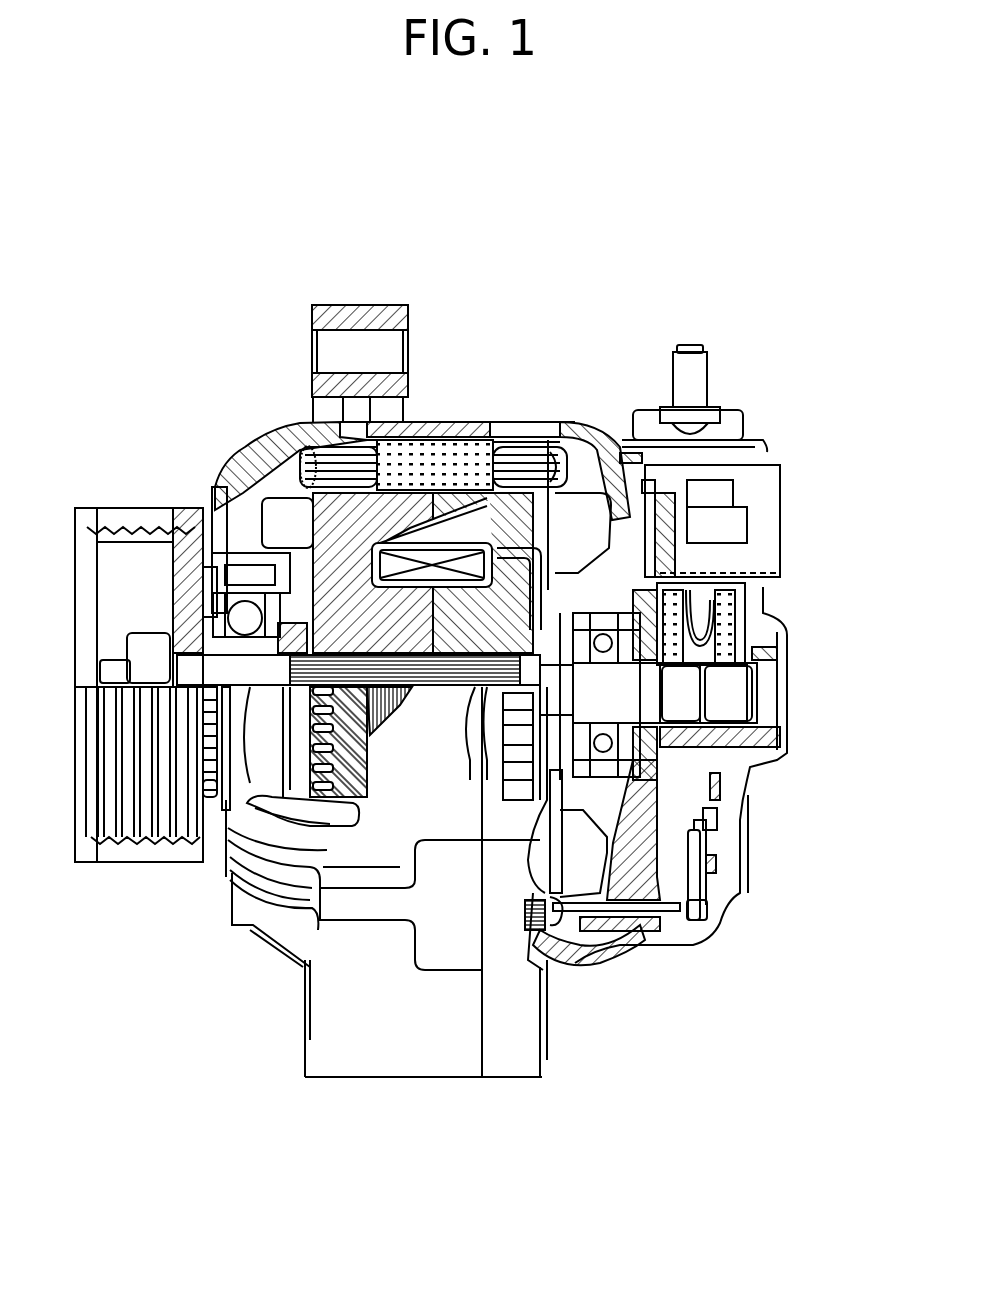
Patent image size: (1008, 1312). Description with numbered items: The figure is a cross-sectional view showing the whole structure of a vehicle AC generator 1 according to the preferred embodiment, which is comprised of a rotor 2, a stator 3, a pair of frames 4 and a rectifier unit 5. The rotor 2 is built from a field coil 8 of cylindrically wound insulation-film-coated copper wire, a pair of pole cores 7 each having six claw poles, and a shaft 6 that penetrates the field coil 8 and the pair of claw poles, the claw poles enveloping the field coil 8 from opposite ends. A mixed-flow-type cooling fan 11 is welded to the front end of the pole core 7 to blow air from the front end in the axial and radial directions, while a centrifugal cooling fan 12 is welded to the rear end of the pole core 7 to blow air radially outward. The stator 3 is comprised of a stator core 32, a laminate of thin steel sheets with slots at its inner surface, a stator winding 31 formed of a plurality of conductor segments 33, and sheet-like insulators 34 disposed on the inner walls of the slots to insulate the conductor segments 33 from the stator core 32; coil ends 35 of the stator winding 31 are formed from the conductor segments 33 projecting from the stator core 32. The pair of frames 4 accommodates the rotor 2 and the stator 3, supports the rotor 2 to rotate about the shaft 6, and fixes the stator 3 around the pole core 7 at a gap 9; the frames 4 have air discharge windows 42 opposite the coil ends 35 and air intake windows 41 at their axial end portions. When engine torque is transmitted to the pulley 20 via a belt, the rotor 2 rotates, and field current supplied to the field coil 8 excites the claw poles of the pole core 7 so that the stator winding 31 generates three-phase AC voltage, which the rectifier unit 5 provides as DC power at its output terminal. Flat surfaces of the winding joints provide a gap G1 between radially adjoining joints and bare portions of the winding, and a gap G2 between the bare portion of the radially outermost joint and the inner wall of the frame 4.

The vehicle AC generator 1 is at (620, 265).
The rotor 2 is at (281, 485).
The stator 3 is at (550, 540).
The frame 4 is at (350, 1062).
The rectifier unit 5 is at (727, 853).
The shaft 6 is at (278, 672).
The pole core 7 is at (333, 513).
The field coil 8 is at (447, 510).
The gap 9 is at (433, 550).
The mixed-flow-type cooling fan 11 is at (217, 490).
The centrifugal cooling fan 12 is at (693, 540).
The pulley 20 is at (145, 548).
The stator winding 31 is at (549, 585).
The stator core 32 is at (428, 440).
The conductor segments 33 is at (435, 465).
The insulators 34 is at (528, 433).
The coil ends 35 is at (350, 447).
The air intake windows 41 is at (215, 497).
The air discharge windows 42 is at (273, 437).
The gap G1 is at (370, 445).
The gap G2 is at (372, 430).